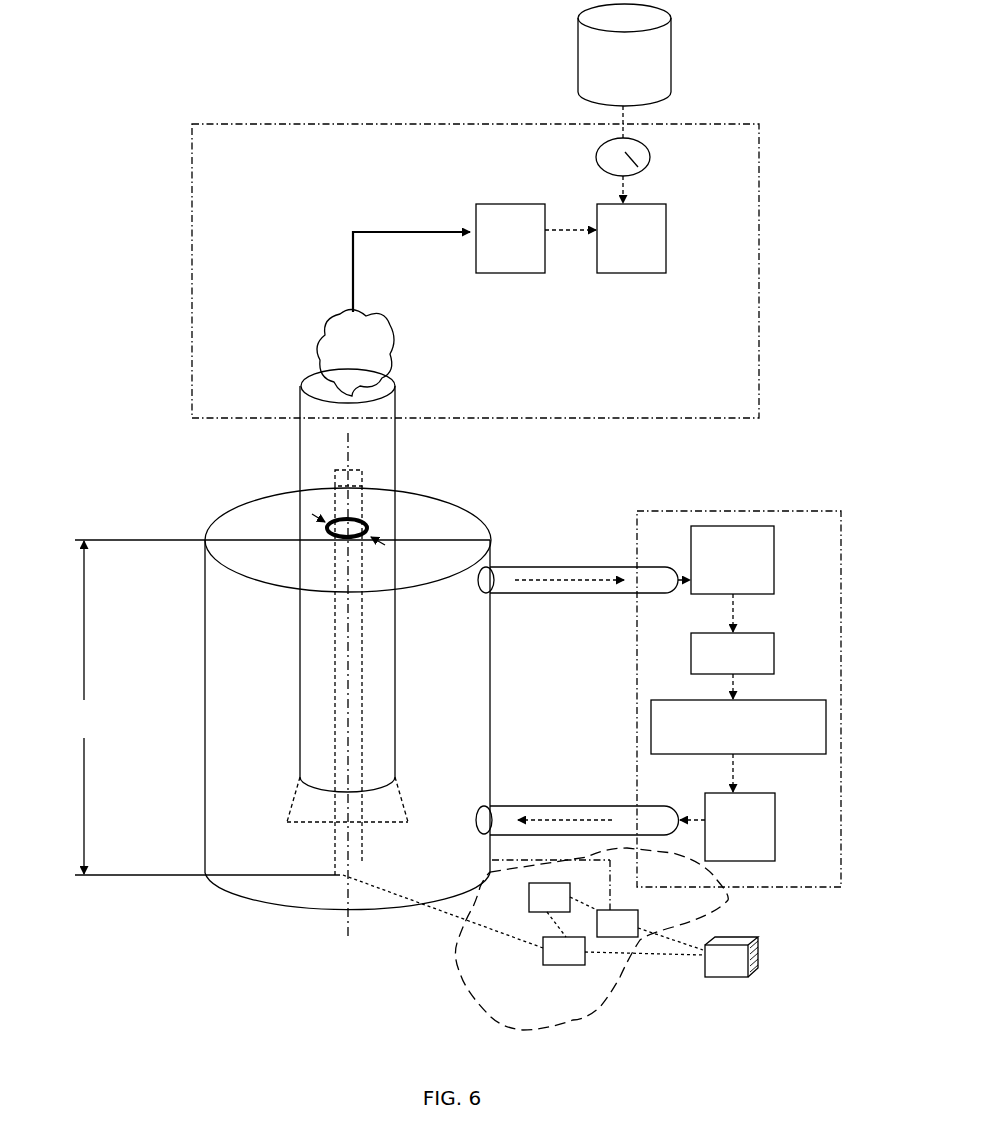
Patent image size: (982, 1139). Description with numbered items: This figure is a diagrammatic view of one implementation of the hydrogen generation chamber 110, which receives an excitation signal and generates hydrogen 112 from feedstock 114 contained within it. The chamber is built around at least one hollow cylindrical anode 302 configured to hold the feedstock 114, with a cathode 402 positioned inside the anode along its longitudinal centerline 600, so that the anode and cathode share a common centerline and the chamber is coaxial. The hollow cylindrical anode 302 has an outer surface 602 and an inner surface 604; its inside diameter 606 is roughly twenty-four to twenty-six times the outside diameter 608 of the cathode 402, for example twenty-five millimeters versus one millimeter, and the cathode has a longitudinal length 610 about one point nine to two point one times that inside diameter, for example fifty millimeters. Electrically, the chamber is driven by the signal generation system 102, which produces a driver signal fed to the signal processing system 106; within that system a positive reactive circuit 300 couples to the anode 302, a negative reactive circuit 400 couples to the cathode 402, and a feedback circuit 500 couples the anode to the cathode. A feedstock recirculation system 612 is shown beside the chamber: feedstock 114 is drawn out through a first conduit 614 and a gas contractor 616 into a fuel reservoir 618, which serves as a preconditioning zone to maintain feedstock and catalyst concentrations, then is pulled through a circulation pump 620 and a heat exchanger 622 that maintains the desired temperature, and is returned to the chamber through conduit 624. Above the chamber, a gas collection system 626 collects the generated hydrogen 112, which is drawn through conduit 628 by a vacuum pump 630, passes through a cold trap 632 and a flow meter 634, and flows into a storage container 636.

The signal generation system 102 is at (760, 953).
The signal processing system 106 is at (607, 992).
The hydrogen generation chamber 110 is at (137, 437).
The hydrogen 112 is at (355, 352).
The feedstock 114 is at (484, 536).
The positive reactive circuit 300 is at (633, 911).
The hollow cylindrical anode 302 is at (220, 510).
The negative reactive circuit 400 is at (552, 966).
The cathode 402 is at (356, 473).
The feedback circuit 500 is at (529, 897).
The longitudinal centerline 600 is at (356, 450).
The outer surface 602 is at (492, 720).
The inner surface 604 is at (300, 686).
The inside diameter 606 is at (305, 823).
The outside diameter 608 is at (372, 528).
The longitudinal length 610 is at (277, 707).
The feedstock recirculation system 612 is at (761, 509).
The first conduit 614 is at (517, 567).
The gas contractor 616 is at (732, 560).
The fuel reservoir 618 is at (732, 634).
The circulation pump 620 is at (738, 714).
The heat exchanger 622 is at (740, 807).
The conduit 624 is at (568, 806).
The gas collection system 626 is at (319, 122).
The conduit 628 is at (298, 472).
The vacuum pump 630 is at (449, 258).
The cold trap 632 is at (605, 238).
The flow meter 634 is at (597, 163).
The storage container 636 is at (624, 71).